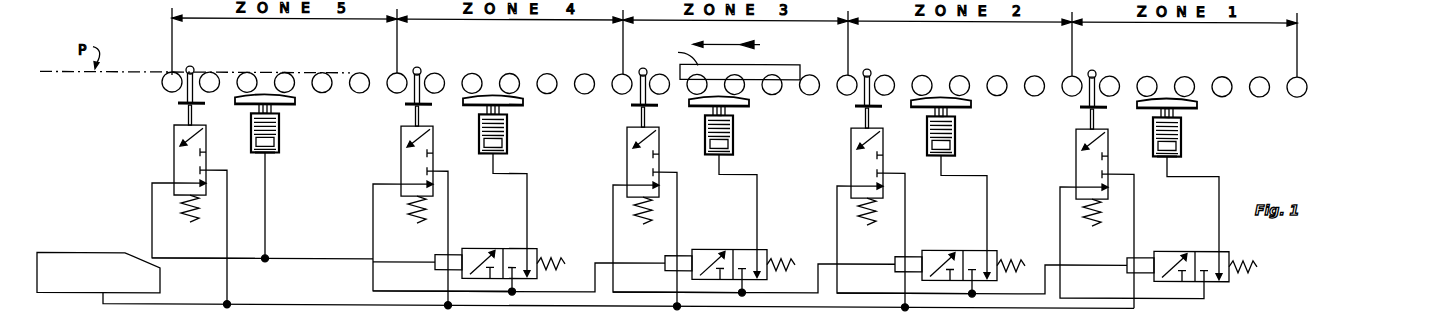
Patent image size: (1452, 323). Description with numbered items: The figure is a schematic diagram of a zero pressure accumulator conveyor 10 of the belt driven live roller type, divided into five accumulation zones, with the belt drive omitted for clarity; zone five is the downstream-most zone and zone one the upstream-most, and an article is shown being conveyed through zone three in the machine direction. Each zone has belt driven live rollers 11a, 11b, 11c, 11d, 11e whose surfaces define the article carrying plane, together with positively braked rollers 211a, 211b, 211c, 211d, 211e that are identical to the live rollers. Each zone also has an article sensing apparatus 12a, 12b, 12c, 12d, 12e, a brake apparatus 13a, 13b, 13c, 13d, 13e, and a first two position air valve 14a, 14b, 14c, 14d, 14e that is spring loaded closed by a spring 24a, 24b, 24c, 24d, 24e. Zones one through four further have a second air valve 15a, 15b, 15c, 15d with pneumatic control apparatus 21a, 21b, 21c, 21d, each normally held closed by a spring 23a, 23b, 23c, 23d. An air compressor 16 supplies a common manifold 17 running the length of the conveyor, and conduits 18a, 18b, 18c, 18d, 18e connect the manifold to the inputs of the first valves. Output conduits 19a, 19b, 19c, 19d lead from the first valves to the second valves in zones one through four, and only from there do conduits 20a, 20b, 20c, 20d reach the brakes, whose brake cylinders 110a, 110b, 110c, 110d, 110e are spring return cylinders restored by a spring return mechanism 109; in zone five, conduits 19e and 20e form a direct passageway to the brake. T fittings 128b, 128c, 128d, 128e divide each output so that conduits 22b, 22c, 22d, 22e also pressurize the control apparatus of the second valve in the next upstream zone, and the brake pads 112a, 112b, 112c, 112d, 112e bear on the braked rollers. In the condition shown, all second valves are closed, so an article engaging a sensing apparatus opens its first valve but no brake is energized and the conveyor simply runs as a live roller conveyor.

The zero pressure accumulator conveyor 10 is at (104, 95).
The belt driven live rollers 11a is at (1259, 82).
The belt driven live rollers 11b is at (1027, 80).
The belt driven live rollers 11c is at (810, 80).
The belt driven live rollers 11d is at (585, 82).
The belt driven live rollers 11e is at (324, 82).
The article sensing apparatus 12a is at (1106, 64).
The article sensing apparatus 12b is at (884, 63).
The article sensing apparatus 12c is at (651, 60).
The article sensing apparatus 12d is at (427, 60).
The article sensing apparatus 12e is at (197, 62).
The brake apparatus 13a is at (1207, 116).
The brake apparatus 13b is at (975, 118).
The brake apparatus 13c is at (752, 124).
The brake apparatus 13d is at (530, 116).
The brake apparatus 13e is at (303, 116).
The first two position air valve 14a is at (1070, 151).
The first two position air valve 14b is at (849, 152).
The first two position air valve 14c is at (620, 147).
The first two position air valve 14d is at (395, 148).
The first two position air valve 14e is at (168, 147).
The second air valve 15a is at (1204, 222).
The second air valve 15b is at (966, 220).
The second air valve 15c is at (728, 239).
The second air valve 15d is at (498, 239).
The air compressor 16 is at (61, 257).
The common manifold 17 is at (332, 288).
The conduit 18a is at (1136, 214).
The conduit 18b is at (905, 210).
The conduit 18c is at (678, 210).
The conduit 18d is at (449, 206).
The conduit 18e is at (227, 232).
The output conduit 19a is at (1060, 236).
The output conduit 19b is at (836, 246).
The output conduit 19c is at (610, 230).
The output conduit 19d is at (372, 228).
The output conduit 19e is at (150, 219).
The conduit 20a is at (1211, 169).
The conduit 20b is at (965, 170).
The conduit 20c is at (748, 170).
The conduit 20d is at (521, 170).
The conduit 20e is at (273, 193).
The control apparatus 21a is at (1122, 268).
The control apparatus 21b is at (892, 258).
The control apparatus 21c is at (668, 256).
The control apparatus 21d is at (438, 254).
The conduit 22b is at (1109, 266).
The conduit 22c is at (789, 279).
The conduit 22d is at (584, 292).
The conduit 22e is at (356, 260).
The spring 23a is at (1262, 265).
The spring 23b is at (1033, 256).
The spring 23c is at (785, 256).
The spring 23d is at (553, 256).
The spring 24a is at (1080, 208).
The spring 24b is at (856, 208).
The spring 24c is at (632, 208).
The spring 24d is at (406, 203).
The spring 24e is at (178, 203).
The spring return mechanism 109 is at (282, 128).
The brake cylinder 110a is at (1152, 155).
The brake cylinder 110b is at (956, 132).
The brake cylinder 110c is at (735, 132).
The brake cylinder 110d is at (509, 133).
The brake cylinder 110e is at (278, 152).
The brake pad 112a is at (1198, 100).
The brake pad 112b is at (972, 100).
The brake pad 112c is at (750, 101).
The brake pad 112d is at (522, 100).
The brake pad 112e is at (293, 100).
The T fitting 128b is at (956, 289).
The T fitting 128c is at (726, 289).
The T fitting 128d is at (496, 288).
The T fitting 128e is at (282, 273).
The positively braked rollers 211a is at (1182, 82).
The positively braked rollers 211b is at (957, 82).
The positively braked rollers 211c is at (706, 78).
The positively braked rollers 211d is at (509, 82).
The positively braked rollers 211e is at (283, 82).